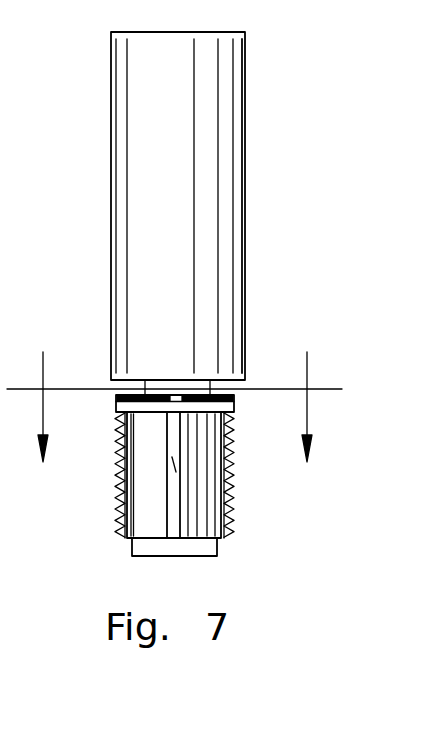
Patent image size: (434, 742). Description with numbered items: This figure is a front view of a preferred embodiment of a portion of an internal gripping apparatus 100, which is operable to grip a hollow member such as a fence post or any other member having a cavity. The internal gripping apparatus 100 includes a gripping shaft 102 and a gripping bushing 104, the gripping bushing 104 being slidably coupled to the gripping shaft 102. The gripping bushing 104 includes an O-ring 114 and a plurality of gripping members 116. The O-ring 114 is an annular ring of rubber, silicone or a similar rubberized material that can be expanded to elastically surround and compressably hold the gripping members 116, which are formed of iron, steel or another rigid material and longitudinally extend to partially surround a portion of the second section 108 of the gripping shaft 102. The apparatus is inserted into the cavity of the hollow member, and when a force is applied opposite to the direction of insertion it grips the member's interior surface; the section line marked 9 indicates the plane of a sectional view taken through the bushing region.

The internal gripping apparatus 100 is at (301, 69).
The gripping shaft 102 is at (275, 215).
The gripping bushing 104 is at (93, 492).
The second section 108 is at (162, 547).
The O-ring 114 is at (235, 411).
The gripping members 116 is at (145, 523).
The section line 9- 9 is at (174, 407).